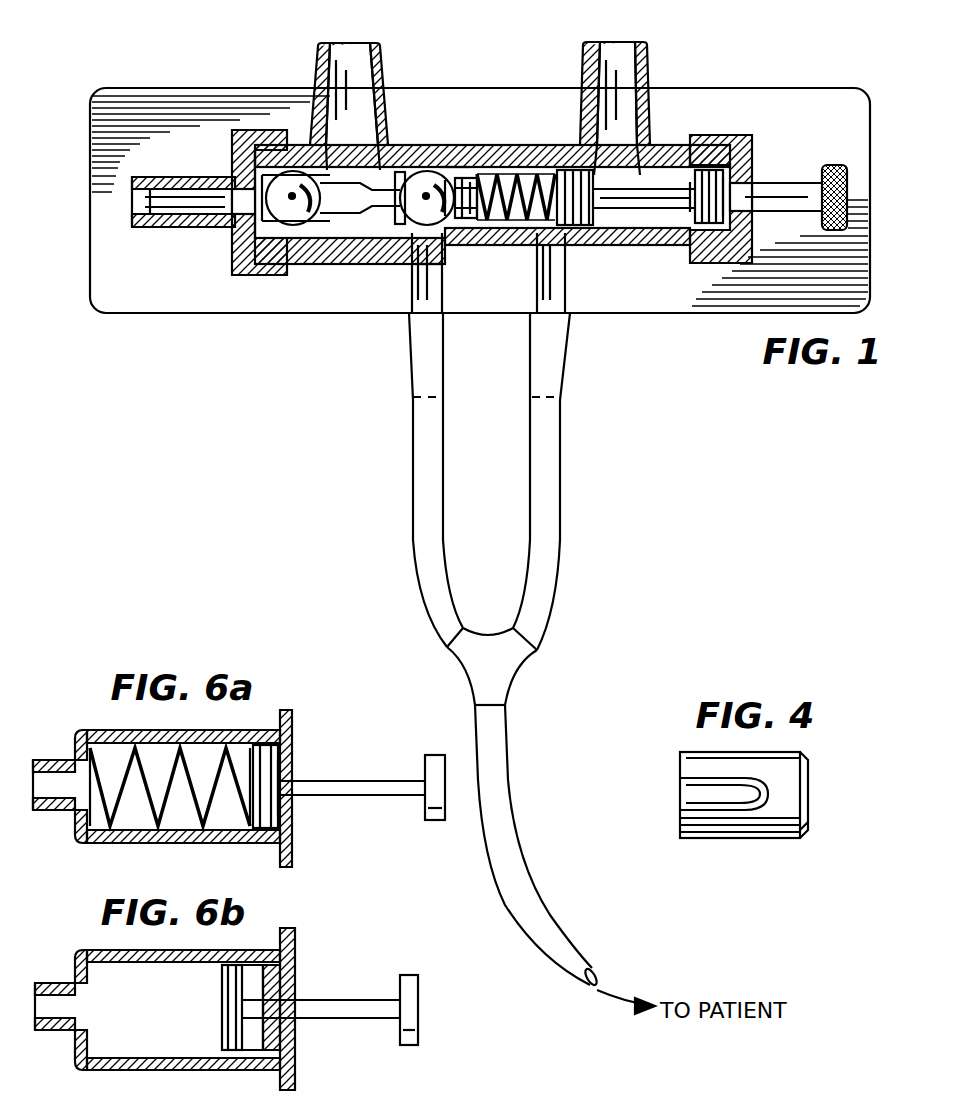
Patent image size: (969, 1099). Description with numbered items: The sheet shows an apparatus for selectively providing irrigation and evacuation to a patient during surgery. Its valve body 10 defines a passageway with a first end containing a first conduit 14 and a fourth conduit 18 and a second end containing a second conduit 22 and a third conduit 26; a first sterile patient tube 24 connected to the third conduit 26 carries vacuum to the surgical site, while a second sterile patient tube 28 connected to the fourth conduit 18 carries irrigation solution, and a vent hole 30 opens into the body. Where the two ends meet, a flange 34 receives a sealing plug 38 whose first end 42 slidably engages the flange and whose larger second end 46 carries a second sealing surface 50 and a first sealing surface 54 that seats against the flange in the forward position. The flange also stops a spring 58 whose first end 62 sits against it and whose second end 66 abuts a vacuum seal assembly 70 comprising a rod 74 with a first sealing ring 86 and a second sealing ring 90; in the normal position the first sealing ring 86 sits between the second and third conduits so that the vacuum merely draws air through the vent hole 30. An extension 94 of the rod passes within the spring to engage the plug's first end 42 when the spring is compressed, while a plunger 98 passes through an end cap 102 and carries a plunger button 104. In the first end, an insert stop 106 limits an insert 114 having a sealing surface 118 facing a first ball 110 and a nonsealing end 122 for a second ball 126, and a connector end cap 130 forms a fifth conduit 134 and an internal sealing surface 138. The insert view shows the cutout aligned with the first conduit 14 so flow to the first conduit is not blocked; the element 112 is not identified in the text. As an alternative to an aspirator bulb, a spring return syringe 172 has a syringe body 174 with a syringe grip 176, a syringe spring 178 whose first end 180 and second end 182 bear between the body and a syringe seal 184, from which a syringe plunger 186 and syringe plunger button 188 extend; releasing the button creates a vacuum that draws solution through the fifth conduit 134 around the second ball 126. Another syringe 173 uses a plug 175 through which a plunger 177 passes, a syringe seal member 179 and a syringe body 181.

In FIG. 1, the valve body 10 is at (331, 264).
In FIG. 1, the first conduit 14 is at (320, 58).
In FIG. 1, the fourth conduit 18 is at (403, 292).
In FIG. 1, the second conduit 22 is at (650, 68).
In FIG. 1, the first sterile patient tube 24 is at (562, 545).
In FIG. 1, the third conduit 26 is at (573, 300).
In FIG. 1, the second sterile patient tube 28 is at (413, 545).
In FIG. 1, the vent hole 30 is at (669, 148).
In FIG. 1, the flange 34 is at (462, 175).
In FIG. 1, the sealing plug 38 is at (450, 240).
In FIG. 1, the first end of sealing plug 42 is at (472, 178).
In FIG. 1, the second end of sealing plug 46 is at (457, 178).
In FIG. 1, the second sealing surface 50 is at (450, 150).
In FIG. 1, the first sealing surface 54 is at (478, 172).
In FIG. 1, the spring 58 is at (517, 170).
In FIG. 1, the first end of spring 62 is at (466, 232).
In FIG. 1, the second end of spring 66 is at (562, 170).
In FIG. 1, the vacuum seal assembly 70 is at (632, 215).
In FIG. 1, the rod 74 is at (706, 226).
In FIG. 1, the first sealing ring 86 is at (668, 226).
In FIG. 1, the second sealing ring 90 is at (755, 162).
In FIG. 1, the extension 94 is at (608, 226).
In FIG. 1, the plunger 98 is at (782, 185).
In FIG. 1, the end cap 102 is at (718, 145).
In FIG. 1, the plunger button 104 is at (840, 164).
In FIG. 1, the insert stop 106 is at (392, 152).
In FIG. 1, the first ball 110 is at (457, 320).
In FIG. 4, the ball cage 112 is at (680, 762).
In FIG. 1, the insert 114 is at (297, 268).
In FIG. 4, the insert 114 is at (753, 840).
In FIG. 1, the sealing surface 118 is at (396, 250).
In FIG. 4, the sealing surface 118 is at (810, 788).
In FIG. 1, the nonsealing end 122 is at (318, 267).
In FIG. 1, the second ball 126 is at (238, 236).
In FIG. 1, the connector end cap 130 is at (152, 229).
In FIG. 1, the fifth conduit 134 is at (166, 177).
In FIG. 1, the internal sealing surface 138 is at (238, 146).
In FIG. 6A, the spring return syringe 172 is at (233, 768).
In FIG. 6B, the syringe 173 is at (220, 983).
In FIG. 6A, the syringe body 174 is at (267, 730).
In FIG. 6B, the plug 175 is at (288, 1030).
In FIG. 6A, the syringe grip 176 is at (290, 815).
In FIG. 6B, the plunger 177 is at (352, 1000).
In FIG. 6A, the syringe spring 178 is at (126, 815).
In FIG. 6B, the syringe seal member 179 is at (222, 1012).
In FIG. 6A, the first end of syringe spring 180 is at (75, 760).
In FIG. 6B, the syringe body 181 is at (75, 985).
In FIG. 6A, the second end of syringe spring 182 is at (242, 815).
In FIG. 6A, the syringe seal 184 is at (265, 760).
In FIG. 6A, the syringe plunger 186 is at (345, 798).
In FIG. 6A, the syringe plunger button 188 is at (436, 755).